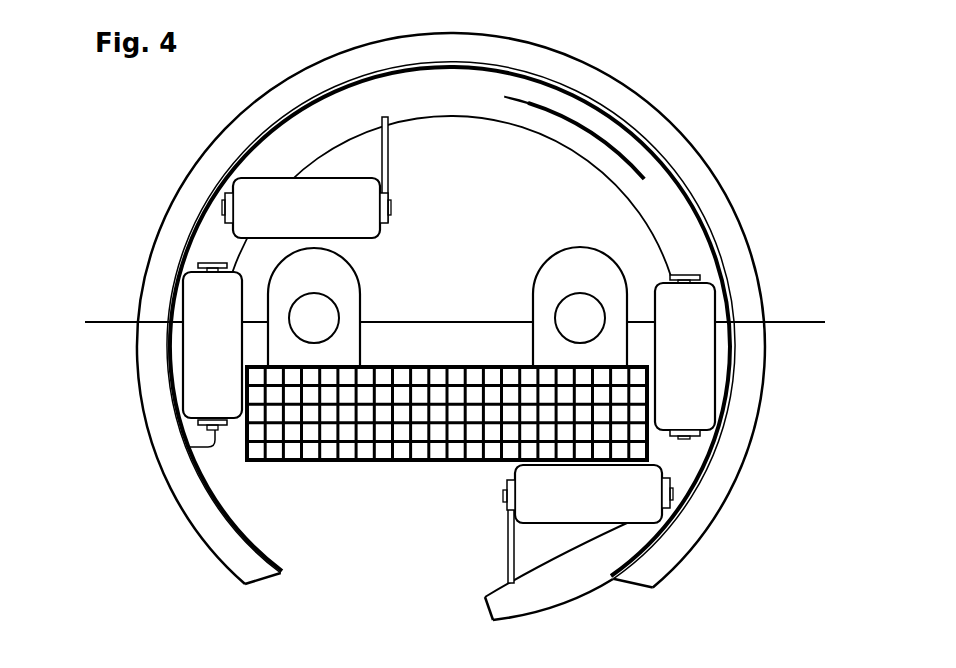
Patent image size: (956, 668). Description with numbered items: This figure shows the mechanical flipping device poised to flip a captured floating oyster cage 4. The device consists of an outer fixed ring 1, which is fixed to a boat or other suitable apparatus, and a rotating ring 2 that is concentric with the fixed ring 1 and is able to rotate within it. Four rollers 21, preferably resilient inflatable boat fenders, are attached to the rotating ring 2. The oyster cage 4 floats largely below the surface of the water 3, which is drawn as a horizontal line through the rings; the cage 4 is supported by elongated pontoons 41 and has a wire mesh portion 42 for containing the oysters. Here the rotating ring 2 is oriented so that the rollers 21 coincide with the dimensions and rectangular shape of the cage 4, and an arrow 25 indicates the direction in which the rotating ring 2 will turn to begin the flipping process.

The fixed ring 1 is at (703, 160).
The rotating ring 2 is at (548, 135).
The surface of the water 3 is at (785, 322).
The oyster cage 4 is at (448, 478).
The rollers 21 is at (283, 178).
The arrow 25 is at (590, 127).
The elongated pontoons 41 is at (362, 287).
The wire mesh portion 42 is at (370, 463).